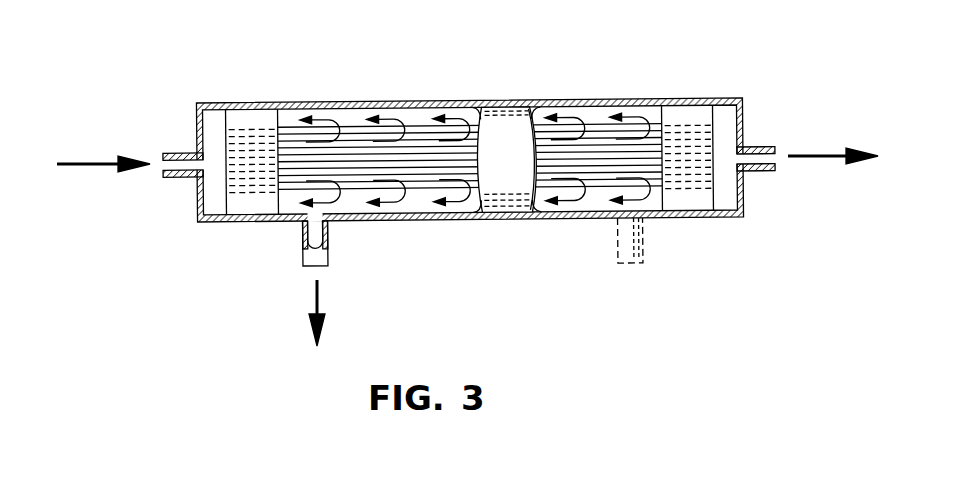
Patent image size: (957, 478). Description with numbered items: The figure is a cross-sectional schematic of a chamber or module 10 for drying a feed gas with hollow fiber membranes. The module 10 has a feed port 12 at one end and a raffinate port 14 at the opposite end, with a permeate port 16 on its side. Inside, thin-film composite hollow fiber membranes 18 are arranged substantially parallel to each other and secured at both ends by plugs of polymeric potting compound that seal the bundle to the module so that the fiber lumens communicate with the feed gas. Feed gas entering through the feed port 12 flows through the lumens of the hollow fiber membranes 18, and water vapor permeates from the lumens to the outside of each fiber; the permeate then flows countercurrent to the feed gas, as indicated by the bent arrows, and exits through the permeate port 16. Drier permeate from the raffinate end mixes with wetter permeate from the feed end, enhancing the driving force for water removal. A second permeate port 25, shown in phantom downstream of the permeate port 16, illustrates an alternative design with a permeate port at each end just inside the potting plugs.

The module 10 is at (513, 120).
The feed port 12 is at (174, 152).
The raffinate port 14 is at (766, 145).
The permeate port 16 is at (302, 258).
The thin-film composite hollow fiber membranes 18 is at (363, 152).
The second permeate port 25 is at (637, 238).